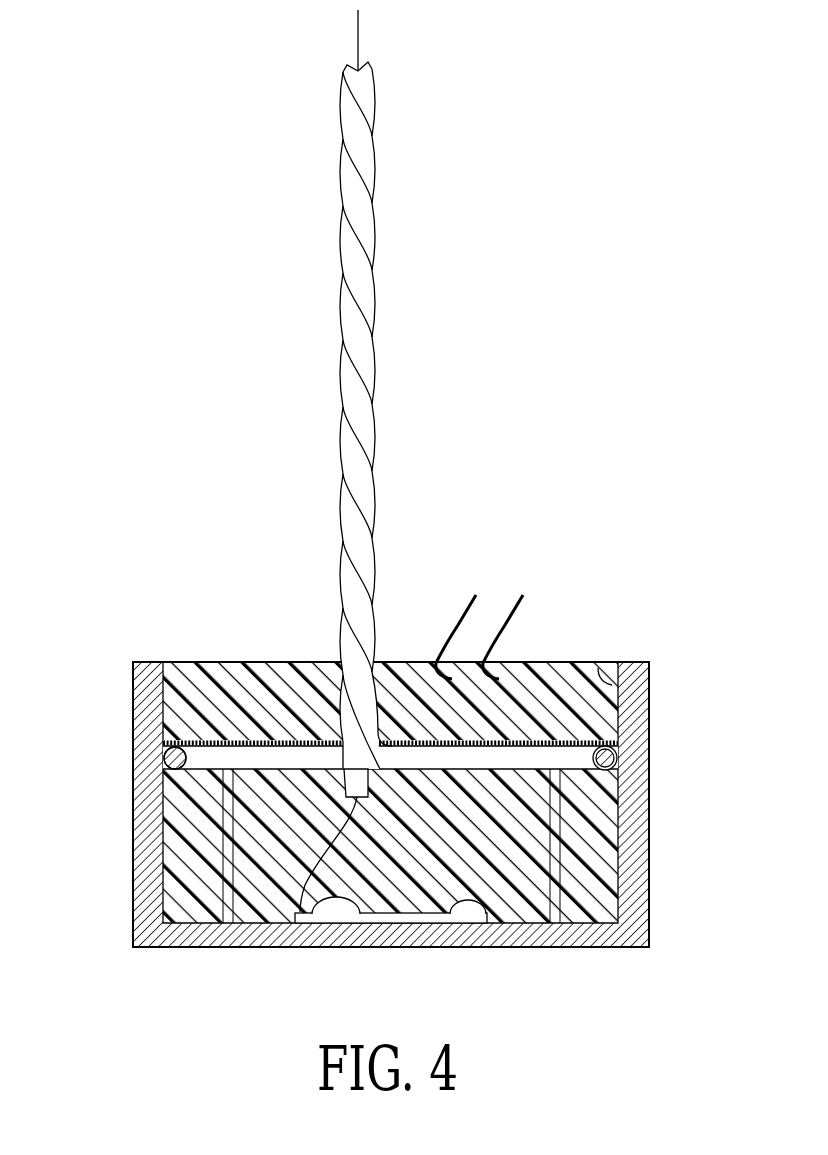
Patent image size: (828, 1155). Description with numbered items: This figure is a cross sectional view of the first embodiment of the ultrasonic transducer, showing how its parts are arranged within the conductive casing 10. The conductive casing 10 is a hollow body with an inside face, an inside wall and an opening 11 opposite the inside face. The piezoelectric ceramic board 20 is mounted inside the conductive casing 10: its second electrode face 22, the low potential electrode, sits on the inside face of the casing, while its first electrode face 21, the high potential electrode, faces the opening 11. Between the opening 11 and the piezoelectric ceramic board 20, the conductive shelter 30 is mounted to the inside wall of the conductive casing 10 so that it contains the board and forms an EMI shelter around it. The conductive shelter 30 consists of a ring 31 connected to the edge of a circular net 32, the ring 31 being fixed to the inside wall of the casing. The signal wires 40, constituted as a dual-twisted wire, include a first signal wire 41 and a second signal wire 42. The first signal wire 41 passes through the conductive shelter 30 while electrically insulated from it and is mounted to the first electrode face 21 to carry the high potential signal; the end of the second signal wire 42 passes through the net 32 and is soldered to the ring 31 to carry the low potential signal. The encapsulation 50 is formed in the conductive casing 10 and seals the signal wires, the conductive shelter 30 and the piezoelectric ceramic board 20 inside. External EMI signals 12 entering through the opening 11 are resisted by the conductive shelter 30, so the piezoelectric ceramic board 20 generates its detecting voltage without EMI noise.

The conductive casing 10 is at (640, 741).
The opening 11 is at (598, 668).
The EMI signals 12 is at (520, 607).
The piezoelectric ceramic board 20 is at (408, 928).
The first electrode face 21 is at (494, 920).
The second electrode face 22 is at (326, 940).
The conductive shelter 30 is at (157, 760).
The ring 31 is at (615, 764).
The circular net 32 is at (247, 742).
The signal wires 40 is at (381, 389).
The first signal wire 41 is at (340, 122).
The second signal wire 42 is at (372, 90).
The encapsulation 50 is at (296, 681).